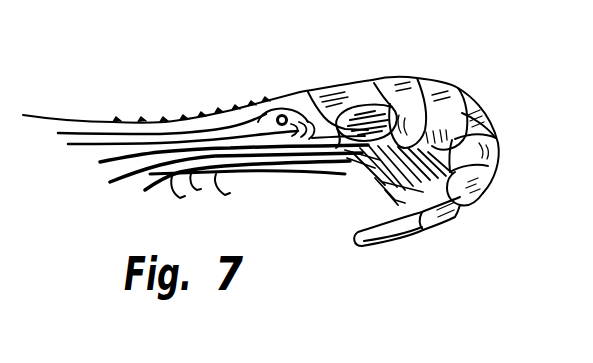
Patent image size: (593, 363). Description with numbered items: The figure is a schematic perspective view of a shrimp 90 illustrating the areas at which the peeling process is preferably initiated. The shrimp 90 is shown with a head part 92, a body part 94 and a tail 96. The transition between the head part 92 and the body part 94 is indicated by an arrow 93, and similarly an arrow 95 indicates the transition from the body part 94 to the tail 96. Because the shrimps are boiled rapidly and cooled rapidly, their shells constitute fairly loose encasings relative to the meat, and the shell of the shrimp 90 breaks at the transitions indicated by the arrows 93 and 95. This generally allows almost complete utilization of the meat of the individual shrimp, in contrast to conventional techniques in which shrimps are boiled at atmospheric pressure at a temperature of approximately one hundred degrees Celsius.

The shrimp 90 is at (264, 80).
The head part 92 is at (198, 107).
The arrow 93 is at (363, 58).
The body part 94 is at (464, 88).
The arrow 95 is at (437, 252).
The tail 96 is at (386, 247).